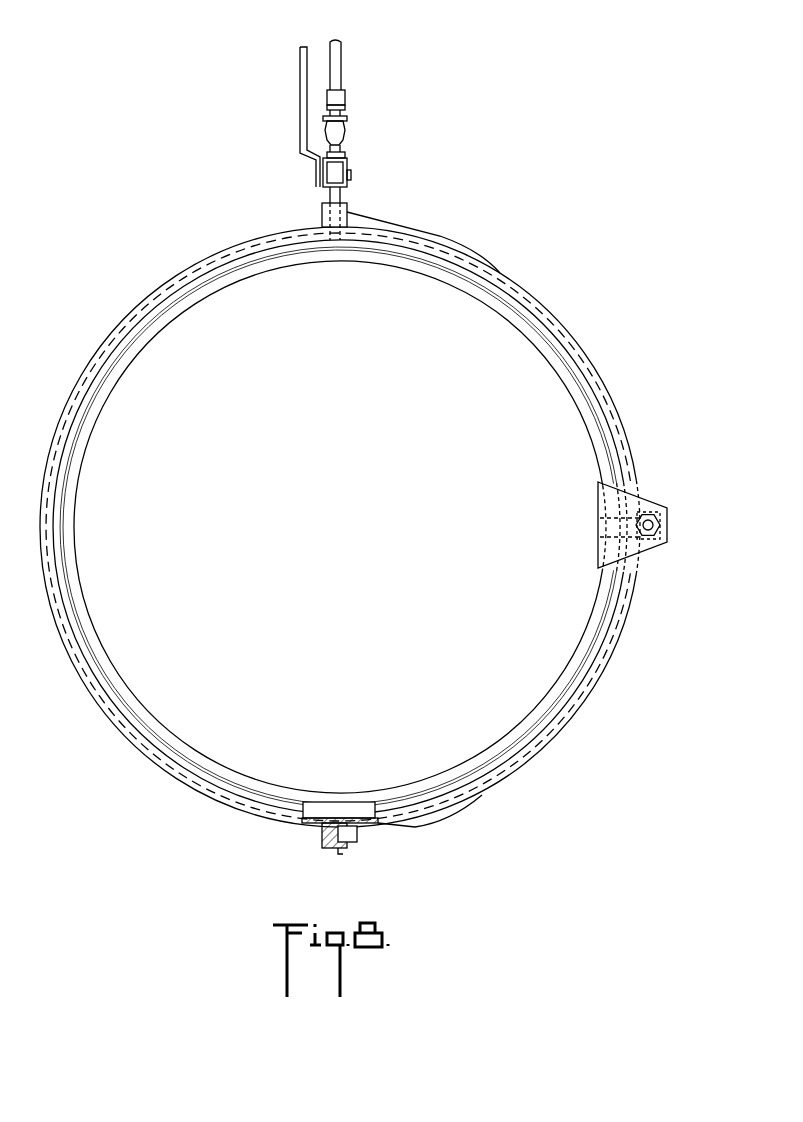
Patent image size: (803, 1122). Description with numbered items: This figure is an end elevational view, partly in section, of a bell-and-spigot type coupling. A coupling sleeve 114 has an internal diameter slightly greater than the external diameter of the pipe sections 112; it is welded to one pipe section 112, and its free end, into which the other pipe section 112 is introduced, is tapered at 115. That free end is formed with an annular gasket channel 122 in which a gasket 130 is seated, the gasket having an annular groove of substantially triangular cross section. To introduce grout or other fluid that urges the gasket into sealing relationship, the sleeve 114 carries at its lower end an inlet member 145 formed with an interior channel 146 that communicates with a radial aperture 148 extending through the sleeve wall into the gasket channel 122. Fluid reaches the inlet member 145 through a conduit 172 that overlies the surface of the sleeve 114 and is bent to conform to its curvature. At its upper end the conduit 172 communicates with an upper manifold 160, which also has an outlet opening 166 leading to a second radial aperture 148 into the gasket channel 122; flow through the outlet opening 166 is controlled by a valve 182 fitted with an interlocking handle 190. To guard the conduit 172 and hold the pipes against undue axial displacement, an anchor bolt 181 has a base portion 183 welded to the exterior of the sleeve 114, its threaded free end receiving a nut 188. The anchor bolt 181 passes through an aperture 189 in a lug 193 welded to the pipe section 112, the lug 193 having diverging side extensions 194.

The pipe section 112 is at (545, 357).
The coupling sleeve 114 is at (433, 250).
The tapered free end 115 is at (455, 778).
The annular gasket channel 122 is at (337, 800).
The gasket 130 is at (360, 812).
The inlet member 145 is at (340, 848).
The interior channel 146 is at (328, 832).
The radial aperture 148 is at (320, 233).
The upper manifold 160 is at (345, 207).
The outlet opening 166 is at (330, 213).
The conduit 172 is at (520, 788).
The anchor bolt 181 is at (660, 532).
The valve 182 is at (337, 173).
The base portion 183 is at (638, 500).
The nut 188 is at (658, 522).
The aperture 189 is at (657, 510).
The handle 190 is at (302, 137).
The lug 193 is at (662, 542).
The diverging side extensions 194 is at (632, 557).